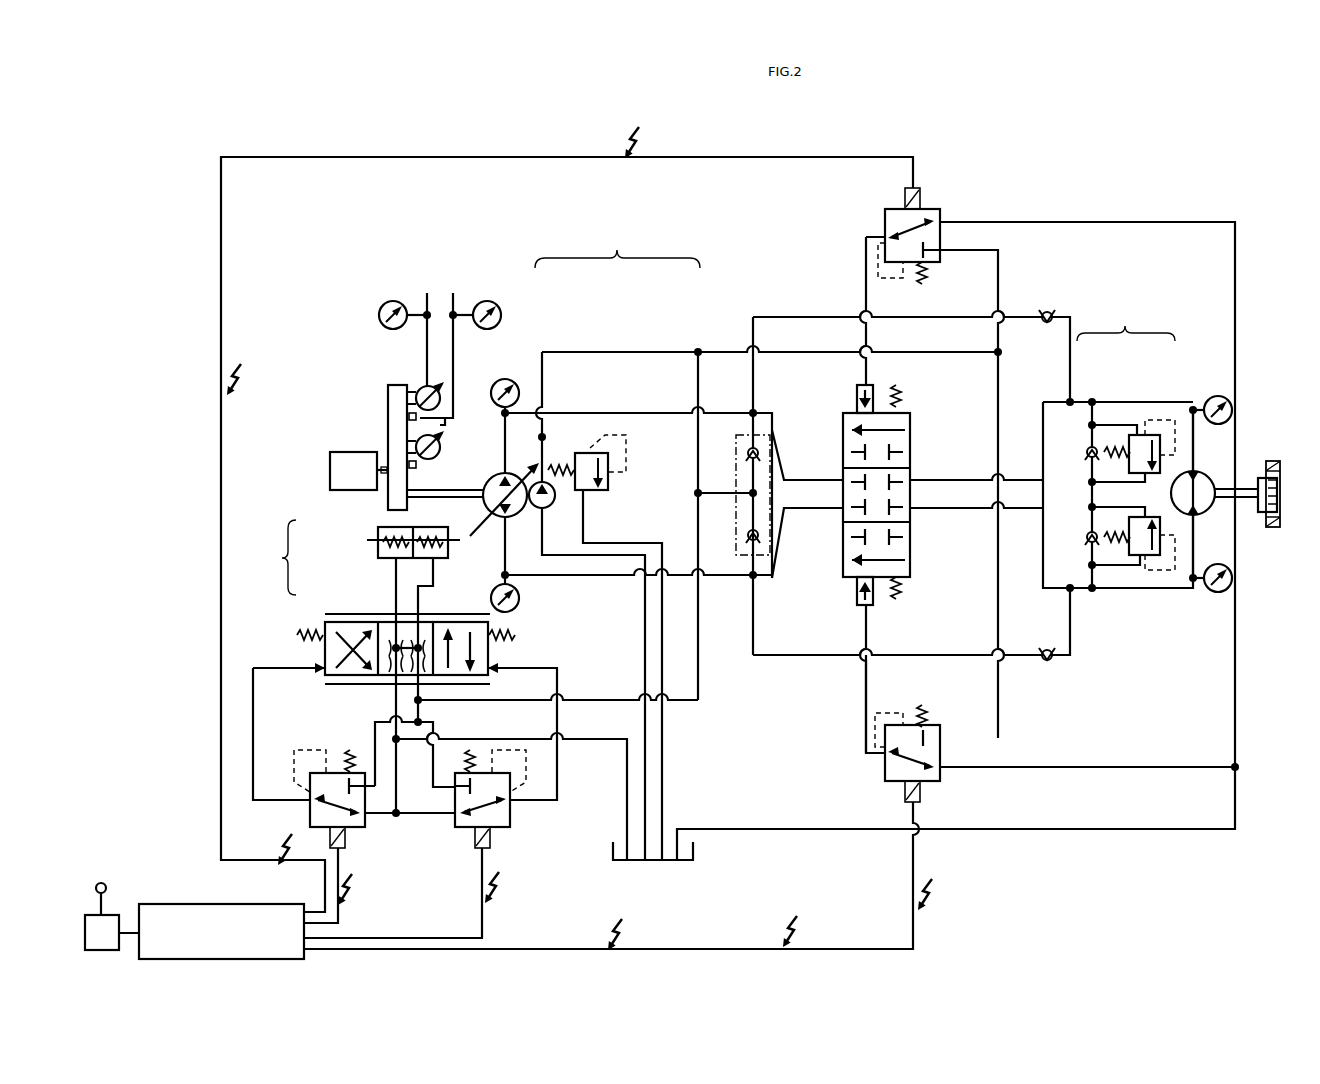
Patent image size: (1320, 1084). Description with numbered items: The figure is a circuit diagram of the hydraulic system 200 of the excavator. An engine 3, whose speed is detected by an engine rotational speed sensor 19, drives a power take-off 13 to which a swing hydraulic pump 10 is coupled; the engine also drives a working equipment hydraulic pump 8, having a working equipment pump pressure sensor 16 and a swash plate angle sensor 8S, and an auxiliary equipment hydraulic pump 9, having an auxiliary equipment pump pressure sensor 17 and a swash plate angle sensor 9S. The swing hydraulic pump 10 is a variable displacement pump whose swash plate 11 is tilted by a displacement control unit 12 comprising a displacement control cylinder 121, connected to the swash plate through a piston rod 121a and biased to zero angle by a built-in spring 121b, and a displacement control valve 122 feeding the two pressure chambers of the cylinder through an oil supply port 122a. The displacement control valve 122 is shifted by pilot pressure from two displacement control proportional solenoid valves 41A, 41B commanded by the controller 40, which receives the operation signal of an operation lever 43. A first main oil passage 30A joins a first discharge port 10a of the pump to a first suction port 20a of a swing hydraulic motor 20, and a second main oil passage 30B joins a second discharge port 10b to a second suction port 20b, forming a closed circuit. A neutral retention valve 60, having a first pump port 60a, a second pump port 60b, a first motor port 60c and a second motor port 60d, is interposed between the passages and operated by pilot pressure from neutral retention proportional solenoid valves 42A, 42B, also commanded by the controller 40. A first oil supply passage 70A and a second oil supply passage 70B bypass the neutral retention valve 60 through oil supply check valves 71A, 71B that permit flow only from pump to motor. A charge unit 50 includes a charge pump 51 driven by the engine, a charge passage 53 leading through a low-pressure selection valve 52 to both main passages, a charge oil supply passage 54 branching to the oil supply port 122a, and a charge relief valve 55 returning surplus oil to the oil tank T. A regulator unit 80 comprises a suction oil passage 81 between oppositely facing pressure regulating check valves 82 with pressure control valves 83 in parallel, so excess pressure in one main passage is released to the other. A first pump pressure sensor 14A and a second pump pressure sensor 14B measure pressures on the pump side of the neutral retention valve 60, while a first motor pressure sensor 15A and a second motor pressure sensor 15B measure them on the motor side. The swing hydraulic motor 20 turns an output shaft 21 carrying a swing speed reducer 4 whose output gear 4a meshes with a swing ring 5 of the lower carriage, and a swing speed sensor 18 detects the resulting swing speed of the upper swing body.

The hydraulic system 200 is at (185, 192).
The engine 3 is at (338, 450).
The engine rotational speed sensor 19 is at (382, 466).
The power take-off 13 is at (394, 384).
The auxiliary equipment hydraulic pump 9 is at (424, 386).
The swash plate angle sensor 9S is at (440, 413).
The working equipment hydraulic pump 8 is at (441, 452).
The swash plate angle sensor 8S is at (418, 470).
The auxiliary equipment pump pressure sensor 17 is at (393, 300).
The working equipment pump pressure sensor 16 is at (487, 300).
The first pump pressure sensor 14A is at (507, 378).
The second pump pressure sensor 14B is at (520, 598).
The swing hydraulic pump 10 is at (519, 472).
The first discharge port 10a is at (497, 476).
The second discharge port 10b is at (507, 520).
The swash plate 11 is at (482, 528).
The displacement control unit 12 is at (278, 557).
The displacement control cylinder 121 is at (378, 540).
The piston rod 121a is at (458, 560).
The built-in spring 121b is at (400, 527).
The displacement control valve 122 is at (328, 621).
The oil supply port 122a is at (425, 705).
The displacement control proportional solenoid valve 41A is at (365, 828).
The displacement control proportional solenoid valve 41B is at (470, 828).
The controller 40 is at (174, 902).
The operation lever 43 is at (101, 881).
The charge unit 50 is at (617, 250).
The charge pump 51 is at (555, 500).
The low-pressure selection valve 52 is at (752, 440).
The charge passage 53 is at (718, 488).
The charge oil supply passage 54 is at (685, 570).
The charge relief valve 55 is at (550, 482).
The first main oil passage 30A is at (601, 411).
The second main oil passage 30B is at (612, 580).
The first oil supply passage 70A is at (775, 315).
The second oil supply passage 70B is at (782, 658).
The oil supply check valve 71A is at (1052, 308).
The oil supply check valve 71B is at (1058, 665).
The neutral retention proportional solenoid valve 42A is at (884, 232).
The neutral retention proportional solenoid valve 42B is at (942, 782).
The neutral retention valve 60 is at (842, 414).
The first pump port 60a is at (842, 479).
The second pump port 60b is at (842, 510).
The first motor port 60c is at (911, 480).
The second motor port 60d is at (911, 509).
The regulator unit 80 is at (1118, 449).
The suction oil passage 81 is at (1100, 398).
The pressure regulating check valve 82 is at (1100, 447).
The pressure control valve 83 is at (1140, 434).
The swing hydraulic motor 20 is at (1212, 507).
The first suction port 20a is at (1198, 473).
The second suction port 20b is at (1198, 515).
The first motor pressure sensor 15A is at (1232, 402).
The second motor pressure sensor 15B is at (1232, 585).
The output shaft 21 is at (1243, 486).
The swing speed reducer 4 is at (1270, 461).
The output gear 4a is at (1281, 482).
The swing ring 5 is at (1279, 506).
The swing speed sensor 18 is at (1262, 508).
The oil tank T is at (700, 852).